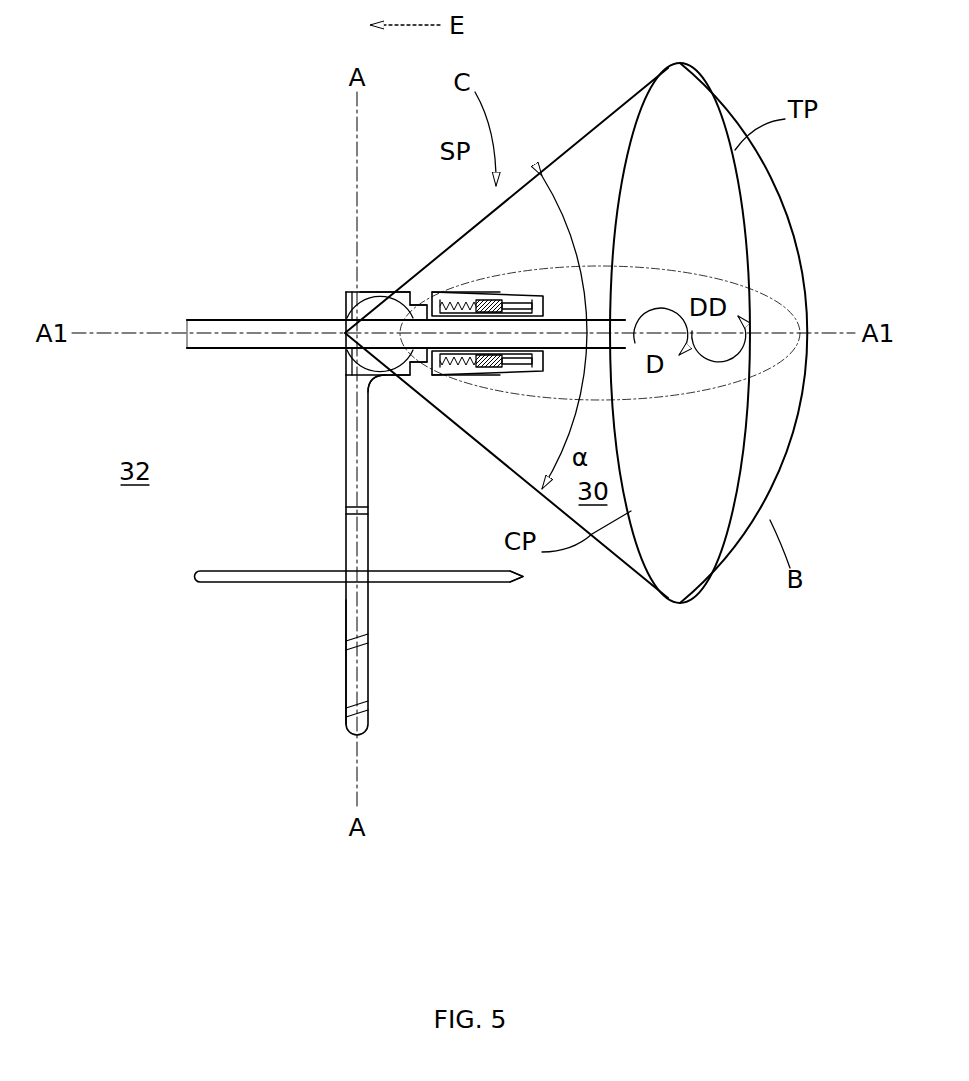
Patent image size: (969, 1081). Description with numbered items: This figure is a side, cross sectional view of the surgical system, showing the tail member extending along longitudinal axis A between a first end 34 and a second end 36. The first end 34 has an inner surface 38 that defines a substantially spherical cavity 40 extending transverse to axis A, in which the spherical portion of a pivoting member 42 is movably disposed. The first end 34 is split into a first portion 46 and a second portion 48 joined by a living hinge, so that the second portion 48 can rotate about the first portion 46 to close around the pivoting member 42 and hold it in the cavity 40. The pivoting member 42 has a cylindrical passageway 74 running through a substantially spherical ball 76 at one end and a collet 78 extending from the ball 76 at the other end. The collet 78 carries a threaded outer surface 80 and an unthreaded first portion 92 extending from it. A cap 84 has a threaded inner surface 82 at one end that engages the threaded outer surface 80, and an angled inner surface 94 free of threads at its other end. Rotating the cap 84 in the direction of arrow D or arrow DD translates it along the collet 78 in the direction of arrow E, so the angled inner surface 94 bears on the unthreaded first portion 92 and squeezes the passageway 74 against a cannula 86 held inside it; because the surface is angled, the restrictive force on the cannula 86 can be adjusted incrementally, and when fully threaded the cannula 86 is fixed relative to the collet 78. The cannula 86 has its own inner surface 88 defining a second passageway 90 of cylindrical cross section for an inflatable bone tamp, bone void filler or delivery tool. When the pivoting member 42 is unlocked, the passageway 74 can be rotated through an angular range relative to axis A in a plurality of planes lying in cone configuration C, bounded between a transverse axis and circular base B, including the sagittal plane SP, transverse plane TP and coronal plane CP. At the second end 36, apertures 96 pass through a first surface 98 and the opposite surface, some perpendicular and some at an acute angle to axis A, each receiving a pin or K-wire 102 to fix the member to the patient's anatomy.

The first end 34 is at (346, 438).
The second end 36 is at (346, 676).
The inner surface 38 is at (350, 300).
The cavity 40 is at (381, 291).
The pivoting member 42 is at (368, 292).
The first portion 46 is at (378, 382).
The second portion 48 is at (350, 303).
The passageway 74 is at (347, 348).
The ball 76 is at (406, 305).
The collet 78 is at (517, 372).
The threaded outer surface 80 is at (446, 376).
The threaded inner surface 82 is at (500, 296).
The cap 84 is at (463, 292).
The cannula 86 is at (598, 318).
The inner surface 88 is at (200, 325).
The second passageway 90 is at (186, 347).
The unthreaded first portion 92 is at (492, 368).
The angled inner surface 94 is at (547, 355).
The aperture 96 is at (345, 508).
The first surface 98 is at (368, 540).
The pin or K-wire 102 is at (478, 584).